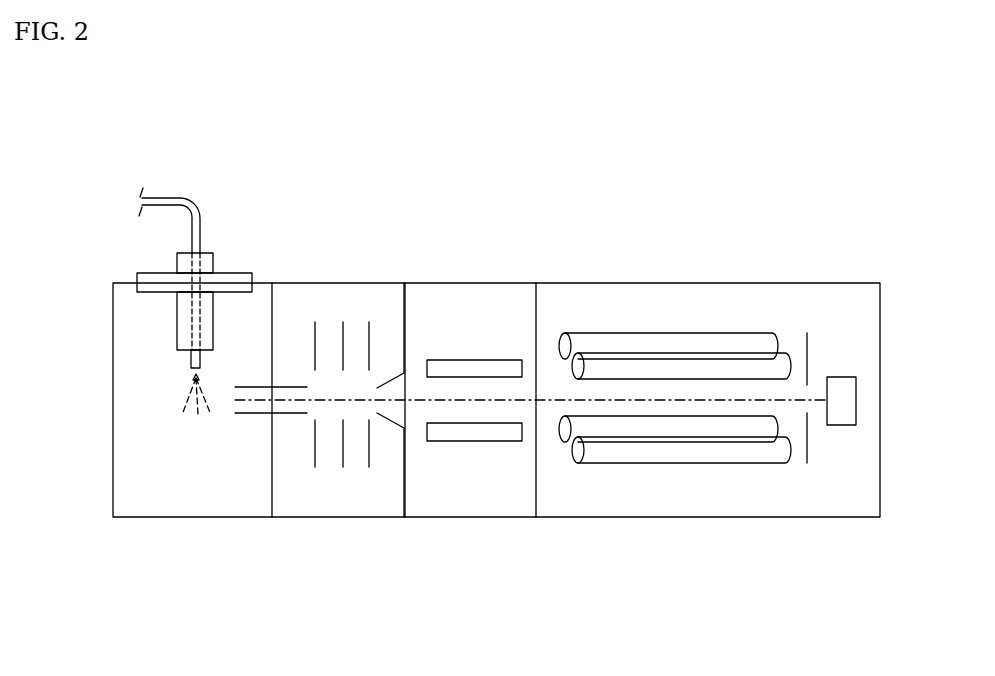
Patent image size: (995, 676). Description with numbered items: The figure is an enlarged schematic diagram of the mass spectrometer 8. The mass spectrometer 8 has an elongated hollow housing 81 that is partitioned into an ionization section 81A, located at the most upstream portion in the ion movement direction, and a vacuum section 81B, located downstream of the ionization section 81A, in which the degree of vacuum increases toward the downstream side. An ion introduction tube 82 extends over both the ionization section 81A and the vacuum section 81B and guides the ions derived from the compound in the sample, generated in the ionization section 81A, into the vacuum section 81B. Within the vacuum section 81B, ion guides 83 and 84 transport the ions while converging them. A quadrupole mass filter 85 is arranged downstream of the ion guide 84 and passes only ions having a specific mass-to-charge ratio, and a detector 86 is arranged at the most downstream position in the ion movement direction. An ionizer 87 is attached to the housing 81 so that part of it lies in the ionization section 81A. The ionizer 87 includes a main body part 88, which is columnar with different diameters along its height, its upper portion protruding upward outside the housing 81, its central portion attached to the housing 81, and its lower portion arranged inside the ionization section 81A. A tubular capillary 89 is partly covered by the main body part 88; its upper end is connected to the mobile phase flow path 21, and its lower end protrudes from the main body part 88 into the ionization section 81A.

The mass spectrometer 8 is at (719, 160).
The mobile phase flow path 21 is at (178, 198).
The housing 81 is at (452, 283).
The ionization section 81A is at (208, 490).
The vacuum section 81B is at (495, 493).
The ion introduction tube 82 is at (282, 387).
The ion guide 83 is at (369, 330).
The ion guide 84 is at (480, 360).
The quadrupole mass filter 85 is at (653, 333).
The detector 86 is at (838, 377).
The ionizer 87 is at (240, 268).
The main body part 88 is at (221, 272).
The capillary 89 is at (190, 313).